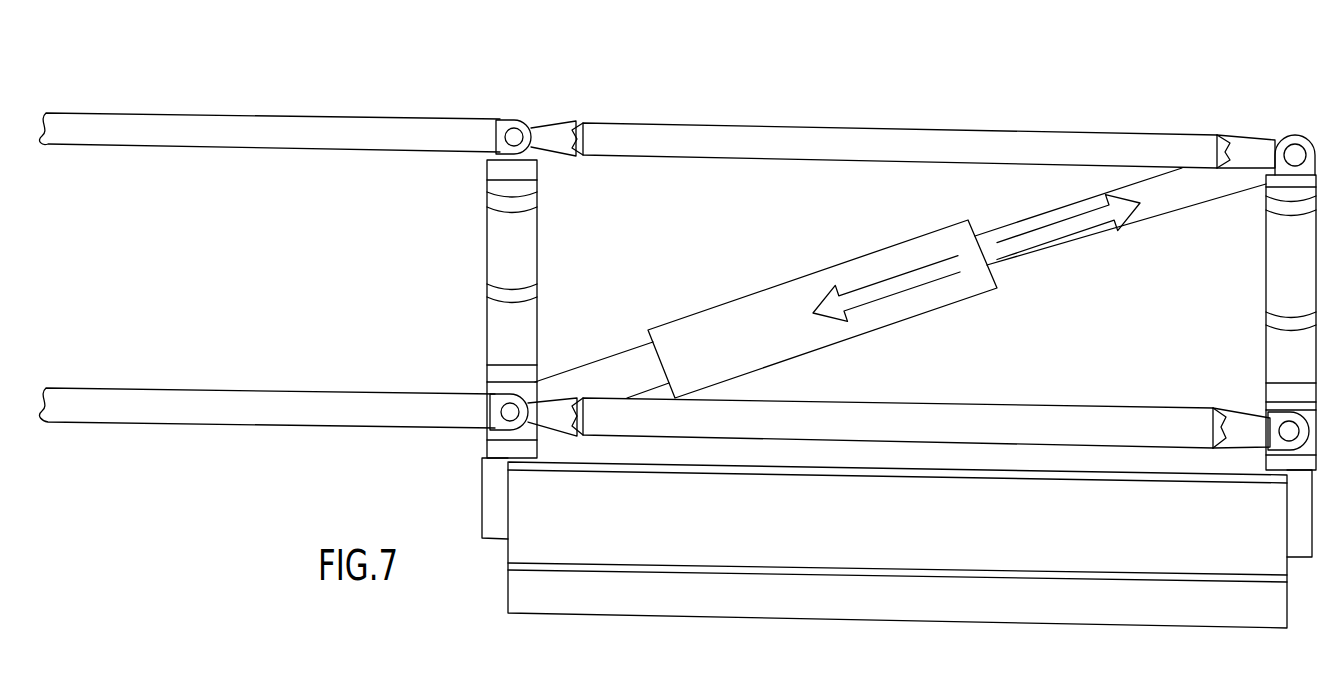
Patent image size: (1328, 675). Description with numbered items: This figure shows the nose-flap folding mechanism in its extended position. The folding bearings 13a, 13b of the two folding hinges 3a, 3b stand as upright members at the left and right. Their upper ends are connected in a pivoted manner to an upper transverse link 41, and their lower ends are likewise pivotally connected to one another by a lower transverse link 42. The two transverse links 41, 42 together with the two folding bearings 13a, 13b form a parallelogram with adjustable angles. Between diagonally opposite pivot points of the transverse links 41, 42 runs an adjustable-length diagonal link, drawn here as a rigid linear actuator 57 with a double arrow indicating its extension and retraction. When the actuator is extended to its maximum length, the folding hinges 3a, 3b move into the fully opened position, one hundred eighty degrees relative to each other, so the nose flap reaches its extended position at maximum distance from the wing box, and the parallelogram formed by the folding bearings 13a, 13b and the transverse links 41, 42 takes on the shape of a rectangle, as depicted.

The folding hinge 3a is at (517, 112).
The folding hinge 3b is at (1297, 125).
The folding bearing 13a is at (500, 262).
The folding bearing 13b is at (1276, 267).
The upper transverse link 41 is at (687, 152).
The lower transverse link 42 is at (915, 425).
The hydraulic cylinder actuator 57 is at (962, 292).